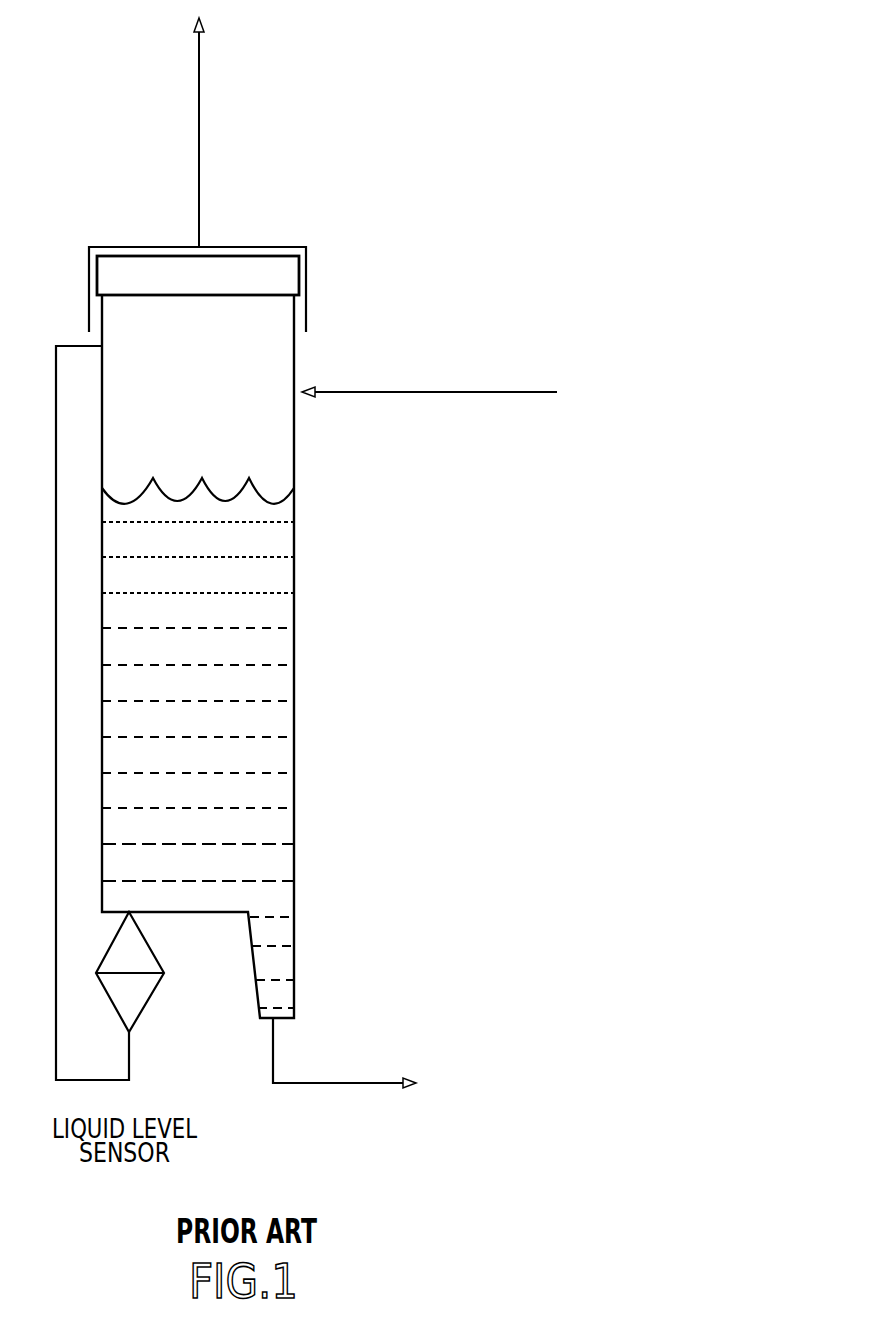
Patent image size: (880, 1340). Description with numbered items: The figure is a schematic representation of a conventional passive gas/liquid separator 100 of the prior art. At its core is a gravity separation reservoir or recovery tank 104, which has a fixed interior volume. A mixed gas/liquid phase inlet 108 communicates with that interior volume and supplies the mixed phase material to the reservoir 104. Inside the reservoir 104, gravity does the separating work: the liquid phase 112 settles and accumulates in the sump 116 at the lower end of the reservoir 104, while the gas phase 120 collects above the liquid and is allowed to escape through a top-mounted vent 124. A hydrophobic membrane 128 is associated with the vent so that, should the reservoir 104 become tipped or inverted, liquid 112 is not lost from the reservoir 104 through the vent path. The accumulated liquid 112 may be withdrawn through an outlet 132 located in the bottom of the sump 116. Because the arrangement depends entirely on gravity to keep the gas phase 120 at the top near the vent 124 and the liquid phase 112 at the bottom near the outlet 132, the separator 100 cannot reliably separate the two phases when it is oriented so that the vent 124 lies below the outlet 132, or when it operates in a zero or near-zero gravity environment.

The passive gas/liquid separator 100 is at (345, 85).
The gravity separation reservoir 104 is at (294, 657).
The mixed gas/liquid phase inlet 108 is at (480, 392).
The liquid phase 112 is at (270, 598).
The sump 116 is at (280, 892).
The gas phase 120 is at (280, 413).
The top-mounted vent 124 is at (197, 247).
The hydrophobic membrane 128 is at (295, 280).
The outlet 132 is at (287, 1020).